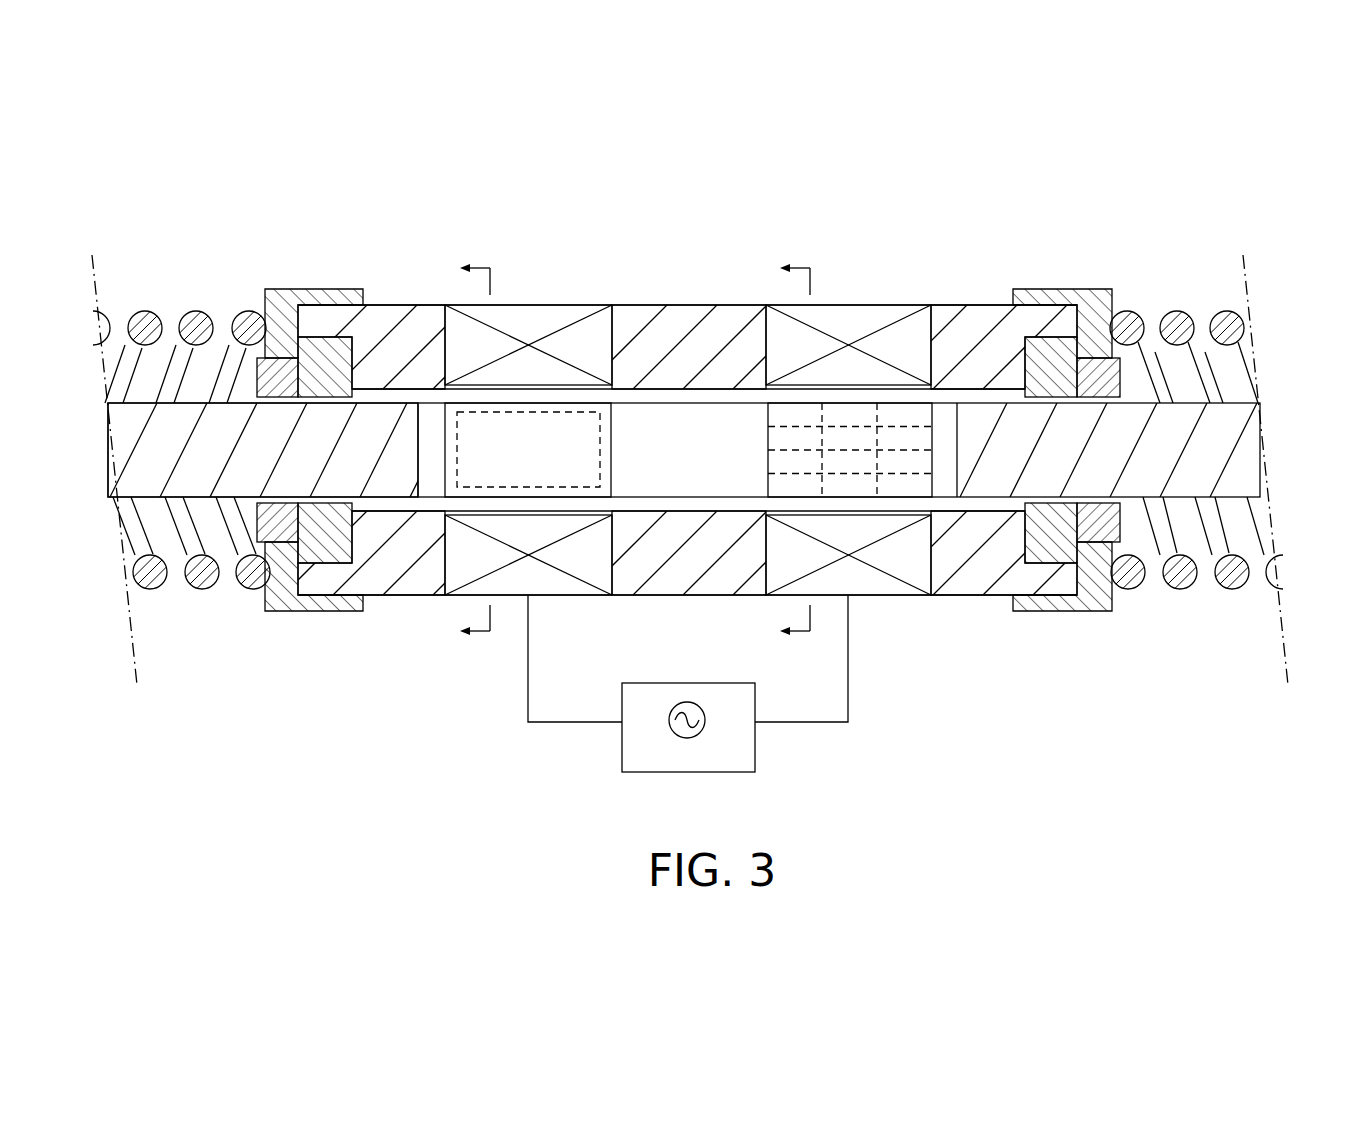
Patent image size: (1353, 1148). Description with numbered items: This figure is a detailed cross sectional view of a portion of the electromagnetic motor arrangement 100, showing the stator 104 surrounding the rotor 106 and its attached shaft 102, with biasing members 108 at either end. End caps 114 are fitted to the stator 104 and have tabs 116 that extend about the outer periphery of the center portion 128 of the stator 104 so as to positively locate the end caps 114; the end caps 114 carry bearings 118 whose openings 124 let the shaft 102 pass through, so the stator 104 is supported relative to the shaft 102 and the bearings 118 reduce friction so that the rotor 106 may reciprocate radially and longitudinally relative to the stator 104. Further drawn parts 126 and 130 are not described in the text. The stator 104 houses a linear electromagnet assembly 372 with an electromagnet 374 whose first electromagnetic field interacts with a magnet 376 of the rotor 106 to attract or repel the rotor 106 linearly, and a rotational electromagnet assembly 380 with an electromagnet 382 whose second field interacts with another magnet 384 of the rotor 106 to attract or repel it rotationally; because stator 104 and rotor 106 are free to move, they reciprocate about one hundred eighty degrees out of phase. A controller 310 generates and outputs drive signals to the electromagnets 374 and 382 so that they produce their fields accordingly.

The electromagnetic motor arrangement 100 is at (700, 439).
The shaft 102 is at (1255, 450).
The stator 104 is at (705, 302).
The rotor 106 is at (357, 489).
The biasing members 108 is at (1177, 311).
The end caps 114 is at (285, 289).
The tabs 116 is at (337, 289).
The bearings 118 is at (257, 378).
The openings 124 is at (1130, 396).
The inner sleeve 126 is at (948, 392).
The center portion 128 is at (655, 305).
The bearing 130 is at (350, 360).
The controller 310 is at (755, 743).
The linear electromagnet assembly 372 is at (527, 387).
The electromagnet 374 is at (528, 424).
The magnet 376 is at (611, 435).
The rotational electromagnet assembly 380 is at (850, 387).
The electromagnet 382 is at (852, 330).
The magnet 384 is at (768, 465).